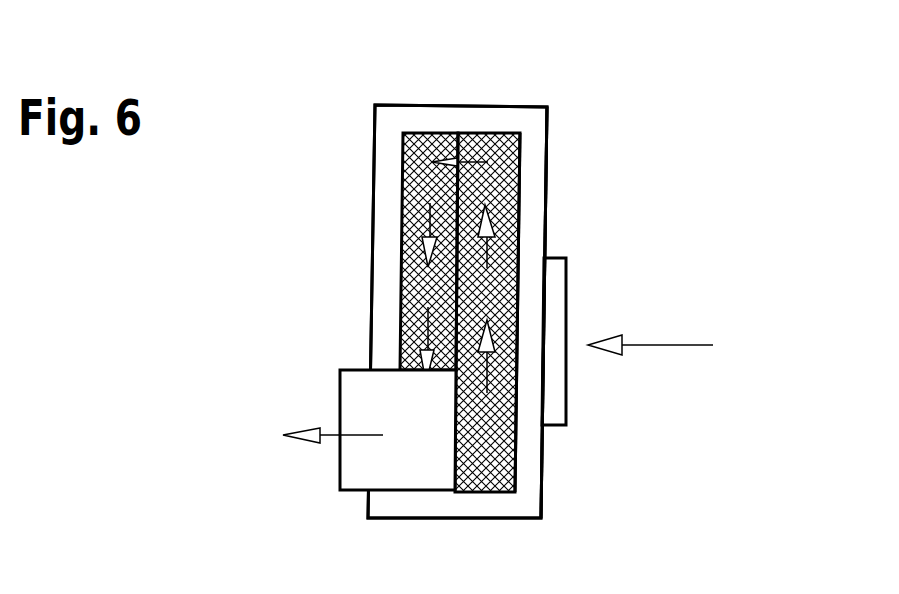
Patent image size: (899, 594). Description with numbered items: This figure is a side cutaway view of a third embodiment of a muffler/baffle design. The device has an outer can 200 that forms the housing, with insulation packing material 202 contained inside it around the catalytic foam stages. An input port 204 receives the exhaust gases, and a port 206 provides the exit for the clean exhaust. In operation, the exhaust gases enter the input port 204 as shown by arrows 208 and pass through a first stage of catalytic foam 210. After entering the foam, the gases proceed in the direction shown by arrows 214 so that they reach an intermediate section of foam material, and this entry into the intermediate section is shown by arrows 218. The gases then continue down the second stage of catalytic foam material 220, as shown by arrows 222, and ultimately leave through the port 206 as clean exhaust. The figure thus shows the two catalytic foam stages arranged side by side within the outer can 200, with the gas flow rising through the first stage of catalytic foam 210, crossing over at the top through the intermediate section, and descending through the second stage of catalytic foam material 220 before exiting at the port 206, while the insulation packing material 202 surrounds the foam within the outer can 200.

The outer can 200 is at (547, 112).
The insulation packing material 202 is at (530, 164).
The input port 204 is at (566, 412).
The exit port 206 is at (367, 437).
The arrows 208 is at (645, 345).
The first stage of catalytic foam 210 is at (493, 294).
The arrows 214 is at (515, 238).
The arrows 218 is at (465, 170).
The second stage of catalytic foam material 220 is at (423, 185).
The arrows 222 is at (423, 250).